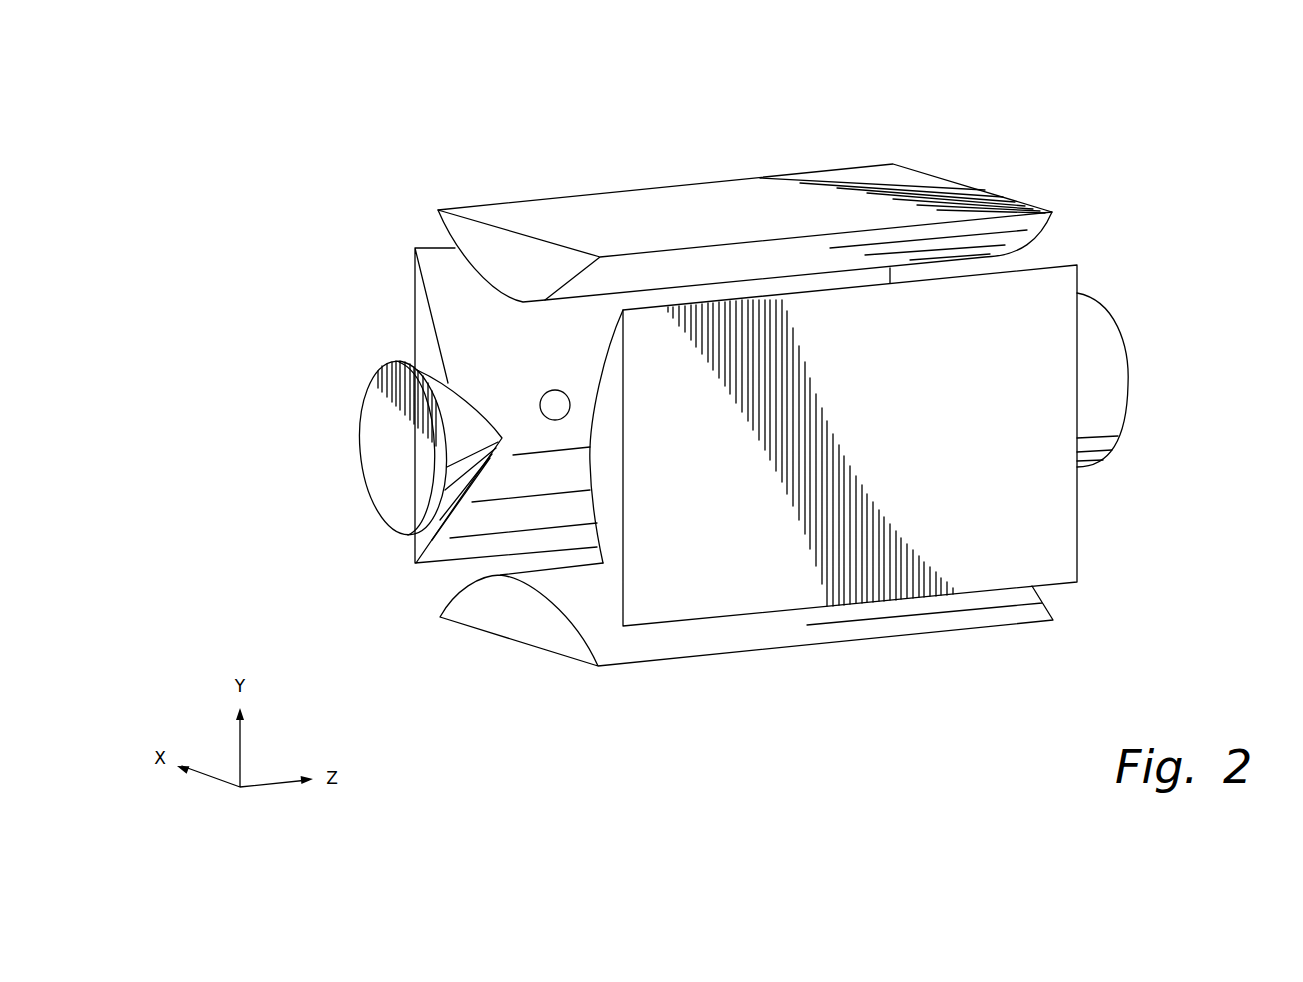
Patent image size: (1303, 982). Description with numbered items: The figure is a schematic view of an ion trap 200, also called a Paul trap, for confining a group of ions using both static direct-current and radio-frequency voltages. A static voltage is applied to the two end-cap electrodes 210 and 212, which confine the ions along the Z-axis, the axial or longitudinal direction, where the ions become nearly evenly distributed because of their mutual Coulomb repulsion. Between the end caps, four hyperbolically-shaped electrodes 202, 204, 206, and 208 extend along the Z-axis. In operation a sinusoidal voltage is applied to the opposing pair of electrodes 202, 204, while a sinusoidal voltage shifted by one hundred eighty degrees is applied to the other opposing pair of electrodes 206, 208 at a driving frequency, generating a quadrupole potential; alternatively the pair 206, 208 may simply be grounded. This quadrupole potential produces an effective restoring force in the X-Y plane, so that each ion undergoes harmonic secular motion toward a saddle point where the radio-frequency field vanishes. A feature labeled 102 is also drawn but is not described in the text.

The ion trap 200 is at (1127, 103).
The hyperbolically-shaped electrode 202 is at (1068, 530).
The hyperbolically-shaped electrode 204 is at (422, 315).
The hyperbolically-shaped electrode 206 is at (780, 640).
The hyperbolically-shaped electrode 208 is at (695, 184).
The end-cap electrode 210 is at (368, 427).
The end-cap electrode 212 is at (1118, 362).
The aperture 102 is at (553, 391).